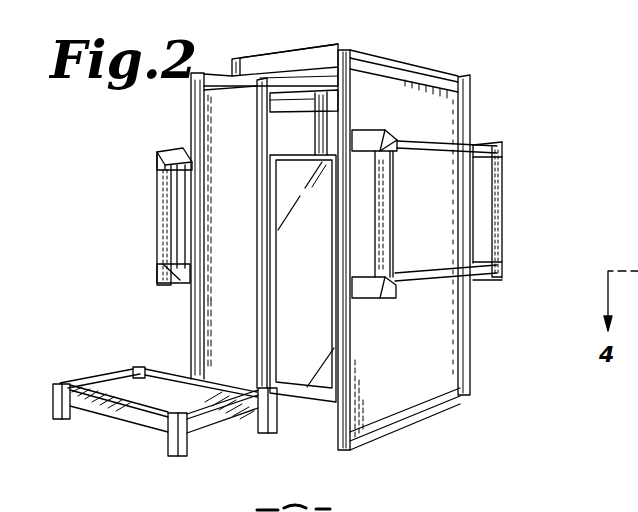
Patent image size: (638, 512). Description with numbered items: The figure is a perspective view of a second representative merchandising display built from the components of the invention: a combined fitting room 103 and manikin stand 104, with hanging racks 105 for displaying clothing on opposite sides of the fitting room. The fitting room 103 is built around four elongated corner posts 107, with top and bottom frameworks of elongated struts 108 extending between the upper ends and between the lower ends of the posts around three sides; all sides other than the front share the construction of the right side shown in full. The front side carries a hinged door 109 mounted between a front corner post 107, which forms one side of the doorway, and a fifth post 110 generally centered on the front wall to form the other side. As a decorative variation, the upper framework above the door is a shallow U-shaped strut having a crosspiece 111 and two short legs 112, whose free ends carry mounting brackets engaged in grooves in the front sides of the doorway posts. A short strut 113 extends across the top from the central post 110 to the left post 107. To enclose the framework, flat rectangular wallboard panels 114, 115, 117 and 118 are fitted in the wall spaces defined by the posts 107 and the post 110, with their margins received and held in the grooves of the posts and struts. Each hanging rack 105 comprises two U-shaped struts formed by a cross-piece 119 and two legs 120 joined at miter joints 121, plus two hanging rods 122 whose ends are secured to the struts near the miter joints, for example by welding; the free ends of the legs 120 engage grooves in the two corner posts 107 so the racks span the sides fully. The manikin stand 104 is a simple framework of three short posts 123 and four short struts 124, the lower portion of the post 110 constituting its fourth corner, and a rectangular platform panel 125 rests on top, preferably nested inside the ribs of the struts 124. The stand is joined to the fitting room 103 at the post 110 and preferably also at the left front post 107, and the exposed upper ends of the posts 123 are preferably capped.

The fitting room 103 is at (484, 80).
The manikin stand 104 is at (124, 446).
The hanging rack 105 is at (516, 193).
The corner post 107 is at (190, 337).
The strut 108 is at (392, 62).
The hinged door 109 is at (303, 278).
The fifth post 110 is at (259, 235).
The crosspiece 111 is at (350, 30).
The leg 112 is at (340, 50).
The short strut 113 is at (214, 72).
The wallboard panel 114 is at (404, 270).
The wallboard panel 115 is at (230, 331).
The wallboard panel 117 is at (304, 121).
The wallboard panel 118 is at (328, 124).
The cross-piece 119 is at (503, 231).
The leg 120 is at (386, 130).
The miter joint 121 is at (392, 156).
The hanging rod 122 is at (476, 143).
The short post 123 is at (134, 366).
The short strut 124 is at (78, 383).
The platform panel 125 is at (163, 399).